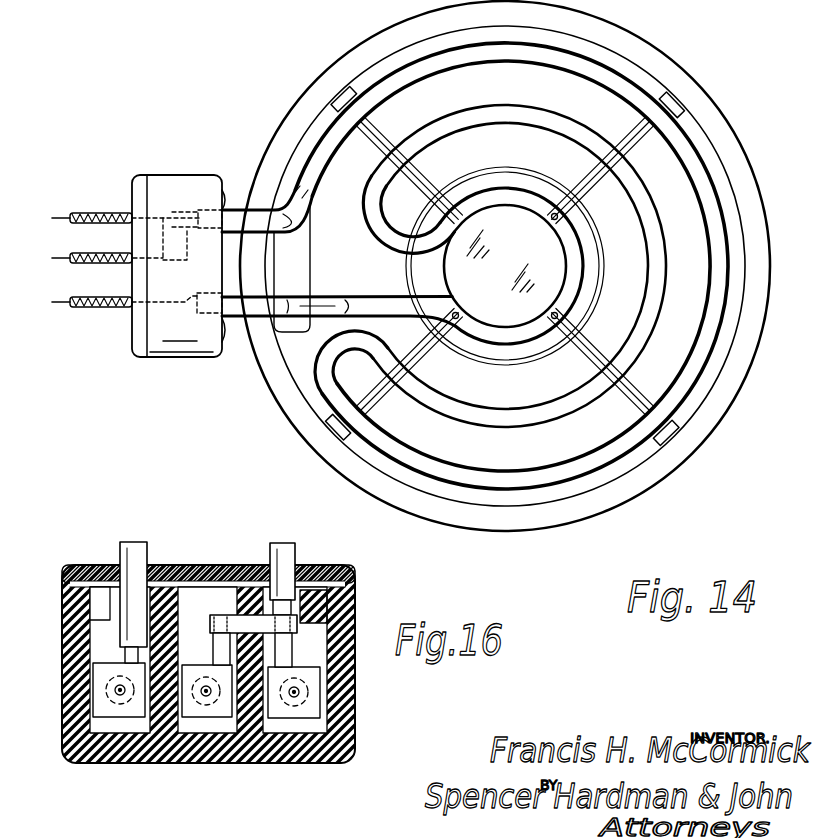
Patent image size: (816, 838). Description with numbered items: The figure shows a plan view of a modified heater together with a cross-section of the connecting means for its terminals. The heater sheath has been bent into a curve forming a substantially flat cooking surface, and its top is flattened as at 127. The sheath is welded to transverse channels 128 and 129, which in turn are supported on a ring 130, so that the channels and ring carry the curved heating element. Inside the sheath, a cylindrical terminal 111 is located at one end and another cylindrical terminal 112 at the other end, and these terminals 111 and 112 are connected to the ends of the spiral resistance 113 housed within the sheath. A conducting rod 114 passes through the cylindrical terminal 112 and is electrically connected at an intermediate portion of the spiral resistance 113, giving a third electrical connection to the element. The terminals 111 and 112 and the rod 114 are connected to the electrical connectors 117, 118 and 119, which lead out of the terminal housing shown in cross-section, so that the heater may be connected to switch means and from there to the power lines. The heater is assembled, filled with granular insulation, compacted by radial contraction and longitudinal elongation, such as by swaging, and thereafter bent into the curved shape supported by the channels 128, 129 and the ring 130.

In FIG. 14, the cylindrical terminal 111 is at (190, 296).
In FIG. 16, the cylindrical terminal 111 is at (126, 660).
In FIG. 14, the cylindrical terminal 112 is at (181, 211).
In FIG. 16, the cylindrical terminal 112 is at (272, 608).
In FIG. 16, the spiral resistance 113 is at (296, 552).
In FIG. 14, the conducting rod 114 is at (160, 239).
In FIG. 16, the conducting rod 114 is at (284, 666).
In FIG. 14, the electrical connector 117 is at (60, 199).
In FIG. 16, the electrical connector 117 is at (300, 693).
In FIG. 14, the electrical connector 118 is at (53, 259).
In FIG. 16, the electrical connector 118 is at (207, 693).
In FIG. 14, the electrical connector 119 is at (56, 303).
In FIG. 16, the electrical connector 119 is at (120, 690).
In FIG. 14, the flattened top 127 is at (650, 270).
In FIG. 14, the transverse channel 128 is at (374, 404).
In FIG. 14, the transverse channel 129 is at (580, 350).
In FIG. 14, the ring 130 is at (582, 508).